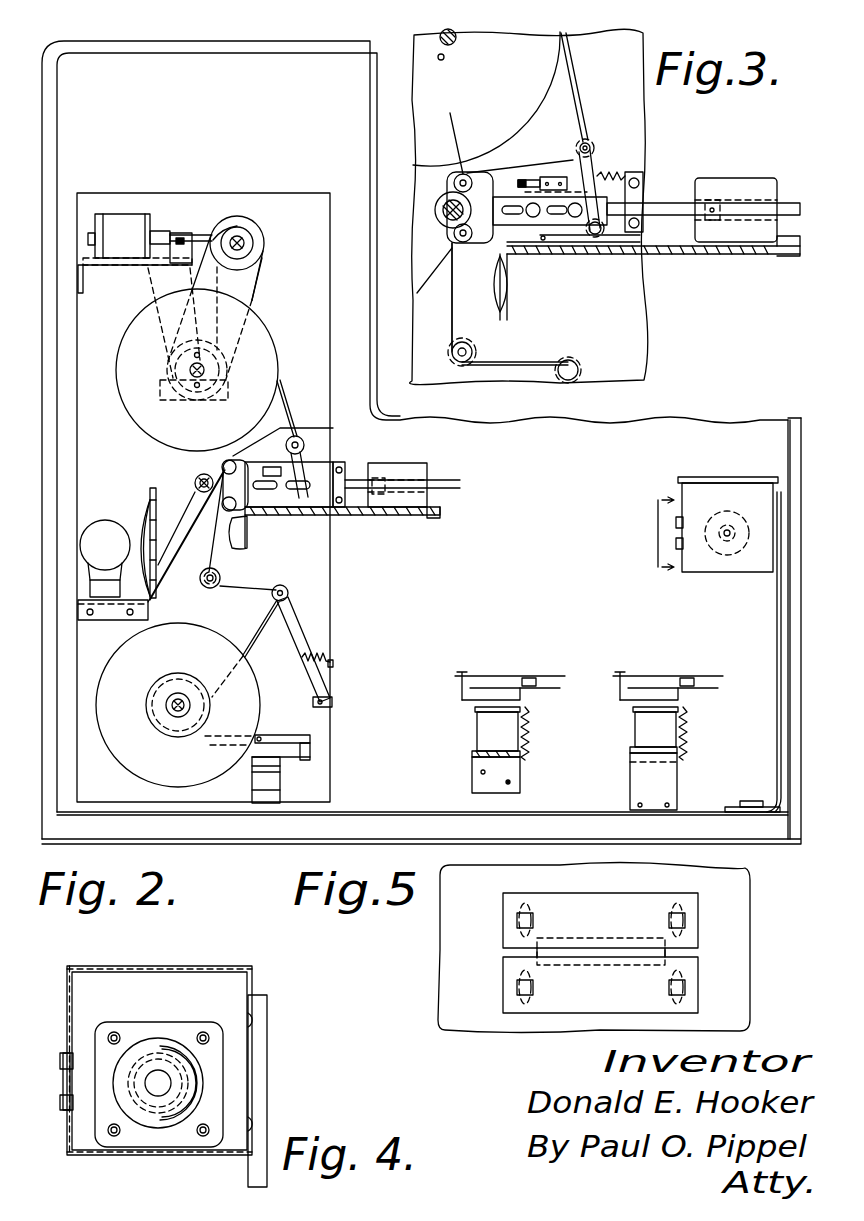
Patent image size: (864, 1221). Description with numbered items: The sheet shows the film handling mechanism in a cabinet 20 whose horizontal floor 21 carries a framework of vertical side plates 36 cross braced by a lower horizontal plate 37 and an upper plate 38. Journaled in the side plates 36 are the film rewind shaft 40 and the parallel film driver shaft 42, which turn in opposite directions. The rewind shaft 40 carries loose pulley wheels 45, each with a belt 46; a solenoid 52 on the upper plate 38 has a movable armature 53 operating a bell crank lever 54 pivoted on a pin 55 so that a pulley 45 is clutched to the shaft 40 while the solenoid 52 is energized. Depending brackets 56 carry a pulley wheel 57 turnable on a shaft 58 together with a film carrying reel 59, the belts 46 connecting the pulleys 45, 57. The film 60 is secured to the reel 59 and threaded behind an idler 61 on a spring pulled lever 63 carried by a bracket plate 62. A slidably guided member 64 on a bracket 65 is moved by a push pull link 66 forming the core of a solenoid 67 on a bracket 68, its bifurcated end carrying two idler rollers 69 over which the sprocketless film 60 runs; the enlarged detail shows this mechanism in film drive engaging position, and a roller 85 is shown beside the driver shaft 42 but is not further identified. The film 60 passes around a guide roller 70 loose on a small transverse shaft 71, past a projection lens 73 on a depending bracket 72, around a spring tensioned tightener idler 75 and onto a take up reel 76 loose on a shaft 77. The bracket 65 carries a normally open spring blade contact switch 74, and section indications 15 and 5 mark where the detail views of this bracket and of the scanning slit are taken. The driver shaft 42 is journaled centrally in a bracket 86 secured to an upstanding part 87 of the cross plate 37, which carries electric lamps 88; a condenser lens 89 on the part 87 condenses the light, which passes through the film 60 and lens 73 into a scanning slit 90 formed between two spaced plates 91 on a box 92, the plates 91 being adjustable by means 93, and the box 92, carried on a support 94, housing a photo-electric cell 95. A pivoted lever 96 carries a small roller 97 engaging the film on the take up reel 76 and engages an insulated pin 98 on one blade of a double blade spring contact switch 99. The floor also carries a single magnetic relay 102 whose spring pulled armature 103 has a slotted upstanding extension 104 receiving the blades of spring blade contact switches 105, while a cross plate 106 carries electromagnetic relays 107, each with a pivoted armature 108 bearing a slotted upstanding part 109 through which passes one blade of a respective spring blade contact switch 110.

In FIG. 2, the section line 5— 5 is at (651, 532).
In FIG. 2, the section line 15— 15 is at (185, 455).
In FIG. 2, the cabinet 20 is at (57, 106).
In FIG. 2, the floor 21 is at (412, 826).
In FIG. 2, the side plates 36 is at (330, 545).
In FIG. 3, the side plates 36 is at (628, 300).
In FIG. 2, the lower horizontal plate 37 is at (95, 620).
In FIG. 2, the upper plate 38 is at (132, 264).
In FIG. 2, the film rewind shaft 40 is at (265, 245).
In FIG. 2, the film driver shaft 42 is at (200, 577).
In FIG. 3, the film driver shaft 42 is at (464, 165).
In FIG. 2, the pulley wheels 45 is at (240, 232).
In FIG. 2, the belt 46 is at (258, 272).
In FIG. 2, the solenoid 52 is at (118, 215).
In FIG. 2, the movable armature 53 is at (160, 232).
In FIG. 2, the bell crank lever 54 is at (205, 235).
In FIG. 2, the pin 55 is at (183, 238).
In FIG. 2, the depending brackets 56 is at (160, 290).
In FIG. 2, the pulley wheel 57 is at (255, 304).
In FIG. 2, the shaft 58 is at (206, 371).
In FIG. 2, the film carrying reel 59 is at (258, 337).
In FIG. 3, the film carrying reel 59 is at (486, 99).
In FIG. 2, the film 60 is at (278, 586).
In FIG. 3, the film 60 is at (572, 62).
In FIG. 3, the idler 61 is at (592, 140).
In FIG. 2, the bracket plate 62 is at (342, 511).
In FIG. 3, the bracket plate 62 is at (631, 254).
In FIG. 2, the spring pulled lever 63 is at (297, 467).
In FIG. 3, the spring pulled lever 63 is at (598, 162).
In FIG. 3, the slidably guided member 64 is at (500, 165).
In FIG. 2, the bracket 65 is at (283, 485).
In FIG. 3, the bracket 65 is at (530, 230).
In FIG. 2, the push pull link 66 is at (350, 515).
In FIG. 3, the push pull link 66 is at (662, 205).
In FIG. 2, the solenoid 67 is at (386, 470).
In FIG. 3, the solenoid 67 is at (737, 183).
In FIG. 2, the bracket 68 is at (430, 516).
In FIG. 3, the bracket 68 is at (770, 254).
In FIG. 3, the idler rollers 69 is at (436, 205).
In FIG. 3, the guide roller 70 is at (476, 347).
In FIG. 3, the small transverse shaft 71 is at (464, 366).
In FIG. 3, the depending bracket 72 is at (520, 257).
In FIG. 2, the projection lens 73 is at (250, 536).
In FIG. 3, the projection lens 73 is at (512, 288).
In FIG. 3, the spring blade contact switch 74 is at (542, 177).
In FIG. 2, the tightener idler 75 is at (290, 588).
In FIG. 2, the take up reel 76 is at (232, 650).
In FIG. 2, the shaft 77 is at (178, 698).
In FIG. 2, the guide roller 85 is at (196, 482).
In FIG. 3, the guide roller 85 is at (452, 235).
In FIG. 2, the bracket 86 is at (198, 476).
In FIG. 2, the upstanding part 87 is at (150, 510).
In FIG. 2, the electric lamp 88 is at (105, 558).
In FIG. 2, the light condenser lens 89 is at (155, 588).
In FIG. 4, the scanning slit 90 is at (62, 1082).
In FIG. 5, the scanning slit 90 is at (660, 955).
In FIG. 2, the plates 91 is at (680, 520).
In FIG. 4, the plates 91 is at (62, 1065).
In FIG. 5, the plates 91 is at (575, 900).
In FIG. 2, the box 92 is at (717, 572).
In FIG. 4, the box 92 is at (190, 966).
In FIG. 5, the box 92 is at (455, 970).
In FIG. 4, the adjusting means 93 is at (62, 1110).
In FIG. 5, the adjusting means 93 is at (682, 915).
In FIG. 2, the support 94 is at (777, 634).
In FIG. 4, the support 94 is at (248, 1177).
In FIG. 2, the photo-electric cell 95 is at (745, 550).
In FIG. 4, the photo-electric cell 95 is at (172, 1050).
In FIG. 2, the pivoted lever 96 is at (265, 737).
In FIG. 2, the small roller 97 is at (178, 705).
In FIG. 2, the insulated pin 98 is at (312, 748).
In FIG. 2, the double blade spring contact switch 99 is at (270, 766).
In FIG. 2, the magnetic relay 102 is at (640, 727).
In FIG. 2, the armature 103 is at (636, 700).
In FIG. 2, the slotted extension 104 is at (620, 680).
In FIG. 2, the spring blade contact switches 105 is at (672, 680).
In FIG. 2, the cross plate 106 is at (475, 757).
In FIG. 2, the electromagnetic relay 107 is at (475, 712).
In FIG. 2, the armature 108 is at (478, 700).
In FIG. 2, the slotted upstanding part 109 is at (462, 680).
In FIG. 2, the spring blade contact switch 110 is at (514, 680).